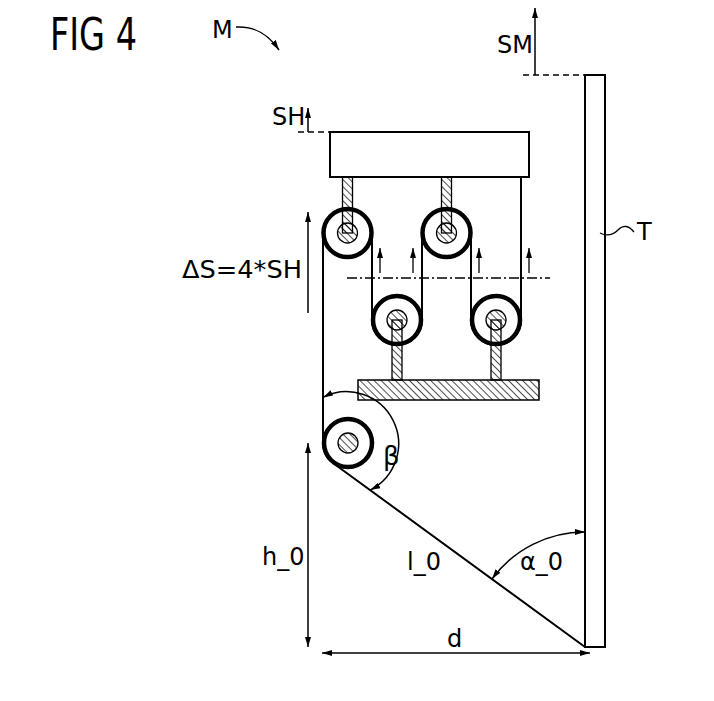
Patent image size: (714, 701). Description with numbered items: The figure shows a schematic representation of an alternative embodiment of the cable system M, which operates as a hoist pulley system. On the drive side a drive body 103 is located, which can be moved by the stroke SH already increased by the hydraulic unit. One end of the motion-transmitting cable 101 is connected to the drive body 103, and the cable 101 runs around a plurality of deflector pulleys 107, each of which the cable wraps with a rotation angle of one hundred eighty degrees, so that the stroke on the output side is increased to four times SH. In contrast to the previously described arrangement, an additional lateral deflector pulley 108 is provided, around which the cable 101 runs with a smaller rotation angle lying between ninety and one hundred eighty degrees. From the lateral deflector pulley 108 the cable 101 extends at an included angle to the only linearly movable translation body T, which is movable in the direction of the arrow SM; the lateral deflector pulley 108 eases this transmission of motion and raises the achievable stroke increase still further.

The motion-transmitting cable 101 is at (323, 347).
The drive body 103 is at (433, 130).
The deflector pulleys 107 is at (358, 228).
The lateral deflector pulley 108 is at (337, 436).